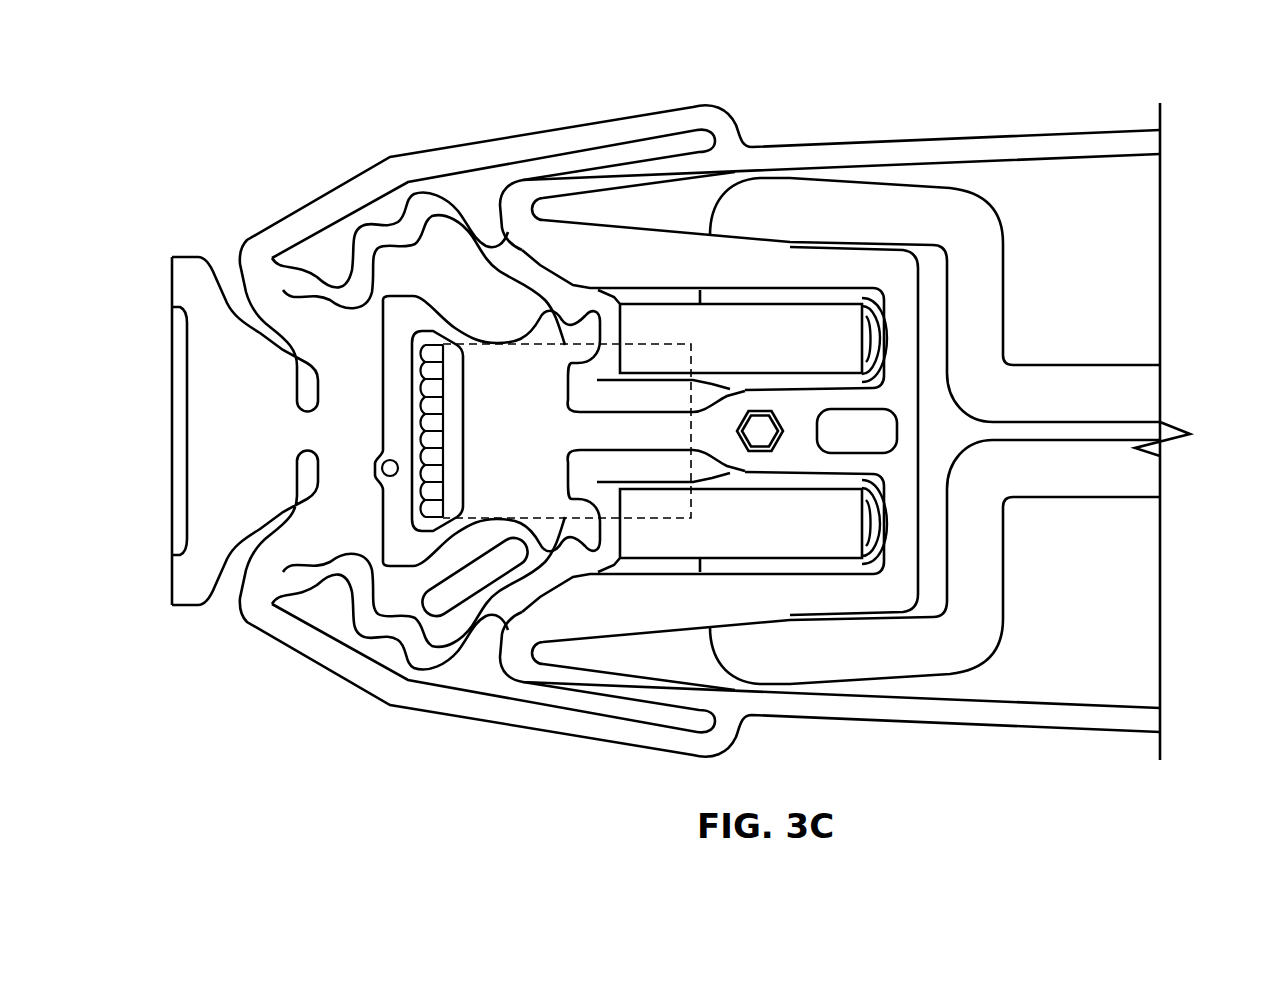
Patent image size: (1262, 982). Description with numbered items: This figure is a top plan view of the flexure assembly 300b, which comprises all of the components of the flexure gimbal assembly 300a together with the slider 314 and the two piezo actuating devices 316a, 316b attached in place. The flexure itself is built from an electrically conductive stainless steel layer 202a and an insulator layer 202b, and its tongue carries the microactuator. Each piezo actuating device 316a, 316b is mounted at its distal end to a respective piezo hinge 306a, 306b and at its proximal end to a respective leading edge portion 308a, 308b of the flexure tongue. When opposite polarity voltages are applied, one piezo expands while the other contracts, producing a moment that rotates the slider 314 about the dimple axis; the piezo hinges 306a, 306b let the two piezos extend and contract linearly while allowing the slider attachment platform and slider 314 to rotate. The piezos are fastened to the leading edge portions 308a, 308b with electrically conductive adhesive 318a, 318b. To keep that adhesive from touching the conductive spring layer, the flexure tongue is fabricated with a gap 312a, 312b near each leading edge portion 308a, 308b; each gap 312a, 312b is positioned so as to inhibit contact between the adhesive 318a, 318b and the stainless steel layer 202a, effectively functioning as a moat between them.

The stainless steel layer 202a is at (1002, 145).
The insulator layer 202b is at (1147, 390).
The flexure gimbal assembly 300a is at (322, 212).
The flexure assembly 300b is at (448, 118).
The piezo hinge 306a is at (600, 565).
The piezo hinge 306b is at (600, 295).
The leading edge portion 308a is at (910, 560).
The leading edge portion 308b is at (887, 327).
The gap 312a is at (863, 560).
The gap 312b is at (870, 380).
The slider 314 is at (453, 483).
The piezo actuating device 316a is at (857, 552).
The piezo actuating device 316b is at (857, 366).
The electrically conductive adhesive 318a is at (872, 513).
The electrically conductive adhesive 318b is at (872, 343).